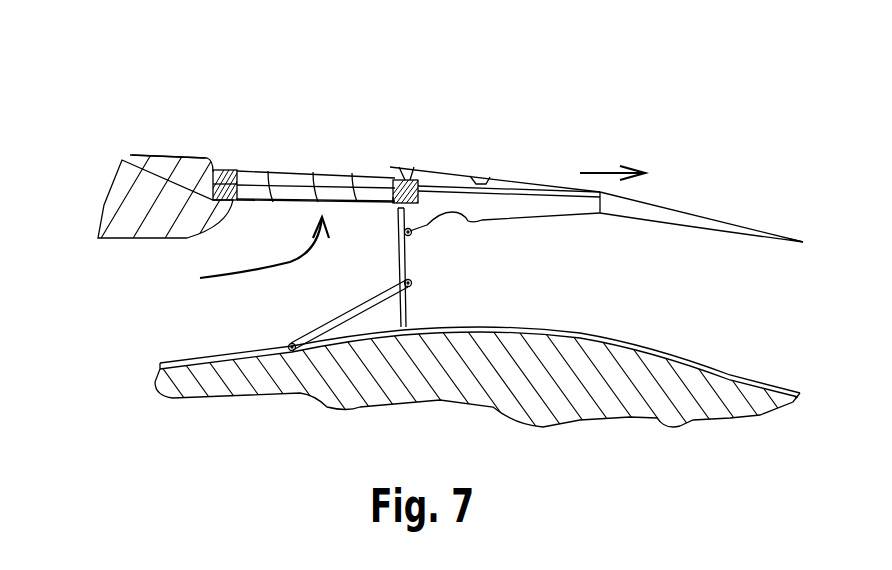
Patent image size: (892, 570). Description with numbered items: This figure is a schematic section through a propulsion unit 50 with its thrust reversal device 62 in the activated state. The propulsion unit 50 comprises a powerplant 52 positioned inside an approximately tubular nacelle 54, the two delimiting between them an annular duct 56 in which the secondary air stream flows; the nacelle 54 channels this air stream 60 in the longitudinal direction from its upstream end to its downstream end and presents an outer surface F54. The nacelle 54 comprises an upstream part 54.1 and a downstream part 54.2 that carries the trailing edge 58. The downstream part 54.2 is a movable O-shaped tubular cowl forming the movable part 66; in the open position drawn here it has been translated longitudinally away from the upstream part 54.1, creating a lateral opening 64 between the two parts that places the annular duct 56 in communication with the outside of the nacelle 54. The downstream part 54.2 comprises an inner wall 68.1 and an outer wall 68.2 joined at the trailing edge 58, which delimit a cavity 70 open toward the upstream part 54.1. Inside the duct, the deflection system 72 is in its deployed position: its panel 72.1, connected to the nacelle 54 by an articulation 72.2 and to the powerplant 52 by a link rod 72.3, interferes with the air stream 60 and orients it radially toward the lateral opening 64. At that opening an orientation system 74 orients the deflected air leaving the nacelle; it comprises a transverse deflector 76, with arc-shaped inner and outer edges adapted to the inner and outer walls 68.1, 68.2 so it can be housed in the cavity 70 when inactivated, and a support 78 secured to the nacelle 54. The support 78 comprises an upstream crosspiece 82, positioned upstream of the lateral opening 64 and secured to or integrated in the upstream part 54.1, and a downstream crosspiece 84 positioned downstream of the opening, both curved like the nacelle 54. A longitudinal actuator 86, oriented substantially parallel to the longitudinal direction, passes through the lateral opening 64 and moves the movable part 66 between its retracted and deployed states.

The propulsion unit 50 is at (123, 63).
The powerplant 52 is at (741, 419).
The nacelle 54 is at (152, 165).
The upstream part 54.1 is at (153, 203).
The downstream part 54.2 is at (547, 172).
The outer surface F54 is at (182, 156).
The annular duct 56 is at (155, 298).
The trailing edge 58 is at (805, 242).
The air stream 60 is at (250, 280).
The thrust reversal device 62 is at (317, 122).
The lateral opening 64 is at (268, 147).
The movable part 66 is at (513, 172).
The inner wall 68.1 is at (547, 215).
The outer wall 68.2 is at (478, 170).
The cavity 70 is at (488, 213).
The deflection system 72 is at (397, 329).
The panel 72.1 is at (398, 257).
The articulation 72.2 is at (410, 232).
The link rod 72.3 is at (340, 316).
The orientation system 74 is at (373, 169).
The transverse deflector 76 is at (352, 157).
The support 78 is at (382, 199).
The upstream crosspiece 82 is at (225, 170).
The downstream crosspiece 84 is at (405, 167).
The longitudinal actuator 86 is at (263, 209).